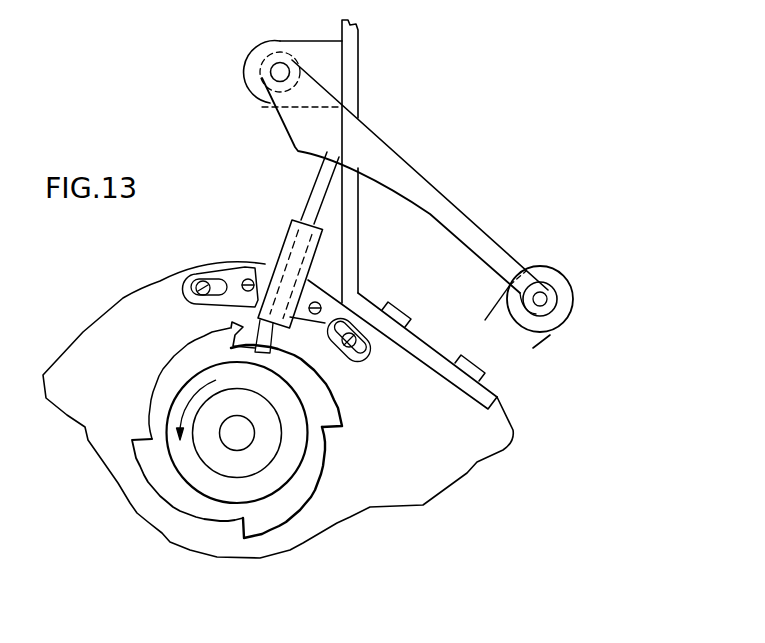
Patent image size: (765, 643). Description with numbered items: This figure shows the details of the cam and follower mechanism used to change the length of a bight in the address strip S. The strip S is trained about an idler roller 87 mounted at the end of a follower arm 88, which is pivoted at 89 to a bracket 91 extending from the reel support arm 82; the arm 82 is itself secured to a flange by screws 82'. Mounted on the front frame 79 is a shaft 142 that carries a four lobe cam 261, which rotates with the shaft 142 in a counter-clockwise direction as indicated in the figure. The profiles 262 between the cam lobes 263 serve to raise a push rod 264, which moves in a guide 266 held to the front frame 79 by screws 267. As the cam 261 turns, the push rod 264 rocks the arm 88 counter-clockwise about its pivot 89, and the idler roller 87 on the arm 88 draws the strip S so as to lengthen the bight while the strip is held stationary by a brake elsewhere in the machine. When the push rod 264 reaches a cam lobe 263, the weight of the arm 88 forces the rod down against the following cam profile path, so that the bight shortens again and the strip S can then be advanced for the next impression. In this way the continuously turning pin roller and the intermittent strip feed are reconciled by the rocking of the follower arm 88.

The bracket 91 is at (312, 41).
The arm 82 is at (381, 161).
The pivot 89 is at (276, 78).
The follower arm 88 is at (447, 203).
The idler roller 87 is at (573, 291).
The address strip S is at (550, 340).
The push rod 264 is at (318, 190).
The guide 266 is at (315, 245).
The cam lobes 263 is at (232, 323).
The screws 267 is at (248, 279).
The screws 82' is at (470, 342).
The four lobe cam 261 is at (308, 378).
The cam profiles 262 is at (160, 390).
The shaft 142 is at (250, 440).
The front frame 79 is at (476, 463).